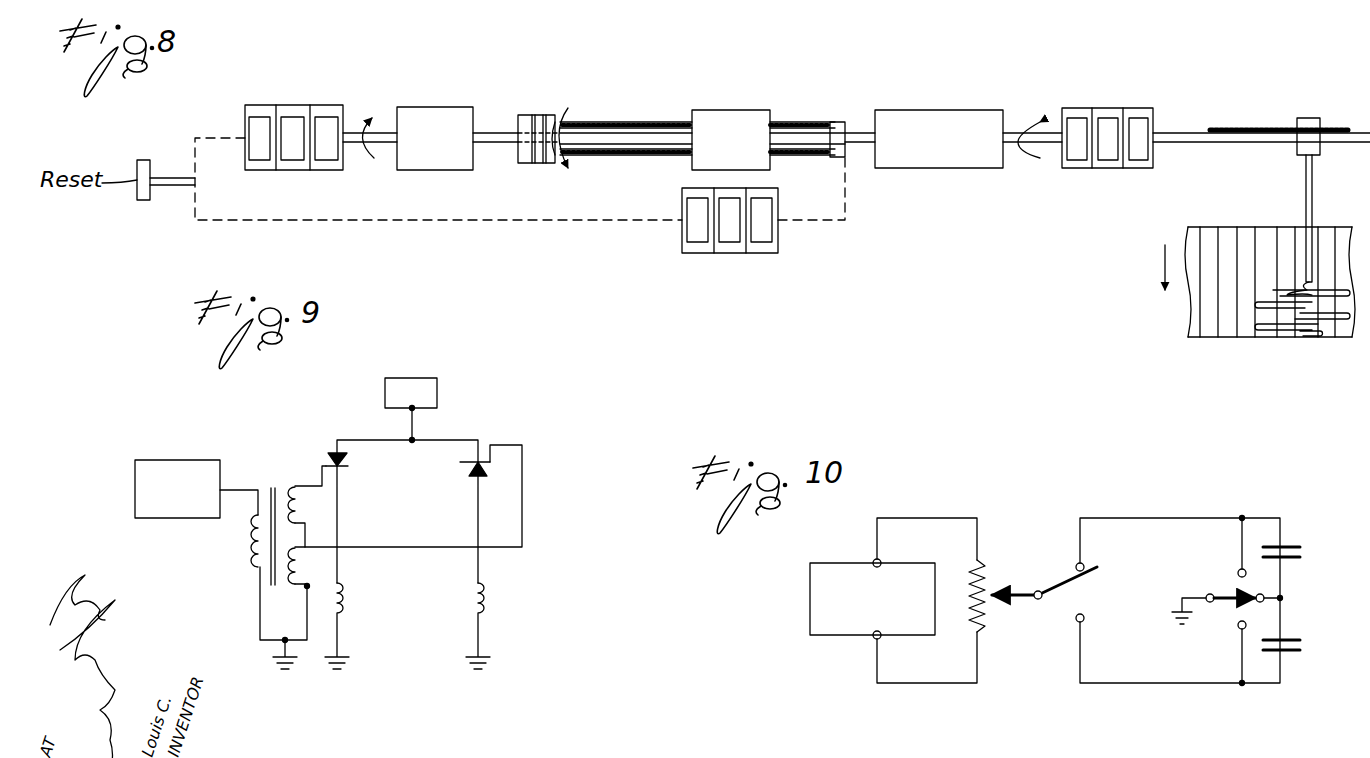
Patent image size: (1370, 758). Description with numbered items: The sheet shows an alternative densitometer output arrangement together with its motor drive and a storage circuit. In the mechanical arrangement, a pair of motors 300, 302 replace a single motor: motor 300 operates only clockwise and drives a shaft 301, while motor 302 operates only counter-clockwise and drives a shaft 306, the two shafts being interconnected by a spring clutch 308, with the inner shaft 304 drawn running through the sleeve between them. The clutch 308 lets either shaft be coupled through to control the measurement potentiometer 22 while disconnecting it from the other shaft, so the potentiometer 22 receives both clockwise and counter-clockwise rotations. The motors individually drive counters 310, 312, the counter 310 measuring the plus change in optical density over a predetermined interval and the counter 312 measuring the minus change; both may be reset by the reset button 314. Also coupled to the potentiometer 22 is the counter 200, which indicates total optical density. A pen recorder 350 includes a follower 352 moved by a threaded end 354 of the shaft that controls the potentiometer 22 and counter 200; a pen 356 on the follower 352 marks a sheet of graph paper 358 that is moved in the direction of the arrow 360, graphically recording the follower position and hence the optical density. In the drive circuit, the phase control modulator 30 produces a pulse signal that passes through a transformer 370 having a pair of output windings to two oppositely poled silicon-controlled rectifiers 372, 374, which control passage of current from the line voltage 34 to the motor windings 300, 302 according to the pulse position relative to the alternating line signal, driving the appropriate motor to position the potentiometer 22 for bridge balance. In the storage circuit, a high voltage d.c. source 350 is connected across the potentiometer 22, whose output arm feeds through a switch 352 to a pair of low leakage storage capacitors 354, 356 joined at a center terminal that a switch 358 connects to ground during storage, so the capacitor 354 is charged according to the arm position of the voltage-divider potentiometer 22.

In FIG. 8, the measurement potentiometer 22 is at (965, 110).
In FIG. 10, the measurement potentiometer 22 is at (990, 565).
In FIG. 9, the phase control modulator 30 is at (193, 460).
In FIG. 9, the line voltage 34 is at (437, 385).
In FIG. 8, the counter 200 is at (1105, 108).
In FIG. 8, the motor 300 is at (430, 107).
In FIG. 9, the motor 300 is at (347, 610).
In FIG. 8, the shaft 301 is at (498, 145).
In FIG. 8, the motor 302 is at (752, 110).
In FIG. 9, the motor 302 is at (488, 612).
In FIG. 8, the shaft 304 is at (655, 137).
In FIG. 8, the shaft 306 is at (600, 122).
In FIG. 8, the spring clutch 308 is at (513, 98).
In FIG. 8, the counter 310 is at (300, 105).
In FIG. 8, the counter 312 is at (778, 245).
In FIG. 8, the reset button 314 is at (137, 192).
In FIG. 8, the pen recorder 350 is at (1344, 196).
In FIG. 10, the pen recorder 350 is at (810, 593).
In FIG. 8, the follower 352 is at (1305, 118).
In FIG. 10, the follower 352 is at (1045, 608).
In FIG. 8, the threaded end 354 is at (1332, 130).
In FIG. 10, the threaded end 354 is at (1290, 540).
In FIG. 8, the pen 356 is at (1302, 263).
In FIG. 10, the pen 356 is at (1290, 655).
In FIG. 8, the sheet of paper 358 is at (1210, 305).
In FIG. 10, the sheet of paper 358 is at (1213, 590).
In FIG. 8, the arrow 360 is at (1163, 283).
In FIG. 9, the transformer 370 is at (298, 453).
In FIG. 9, the silicon-controlled rectifier 372 is at (348, 468).
In FIG. 9, the silicon-controlled rectifier 374 is at (462, 465).